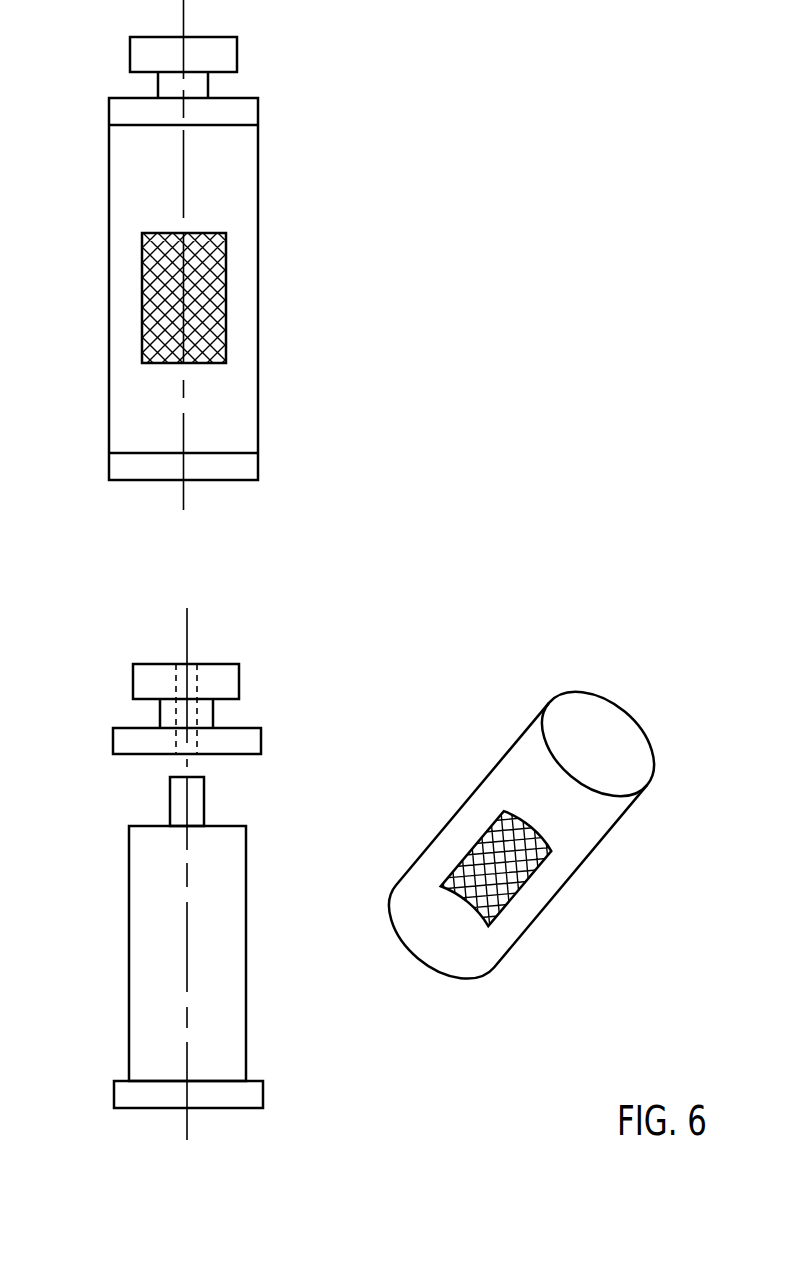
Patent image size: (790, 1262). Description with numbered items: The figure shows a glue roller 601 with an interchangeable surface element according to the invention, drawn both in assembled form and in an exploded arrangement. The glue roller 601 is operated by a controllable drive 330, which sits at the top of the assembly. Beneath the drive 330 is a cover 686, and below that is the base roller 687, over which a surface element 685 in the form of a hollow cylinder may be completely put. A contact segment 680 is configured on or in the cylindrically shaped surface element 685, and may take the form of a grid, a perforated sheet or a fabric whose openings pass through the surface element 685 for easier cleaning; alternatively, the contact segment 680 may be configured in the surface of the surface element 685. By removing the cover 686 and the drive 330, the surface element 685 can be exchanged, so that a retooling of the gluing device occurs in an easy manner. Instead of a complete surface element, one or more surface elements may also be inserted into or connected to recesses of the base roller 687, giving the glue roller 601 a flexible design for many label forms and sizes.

The controllable drive 330 is at (238, 55).
The glue roller 601 is at (248, 148).
The contact segment 680 is at (227, 268).
The surface element 685 is at (591, 832).
The cover 686 is at (113, 742).
The base roller 687 is at (240, 879).